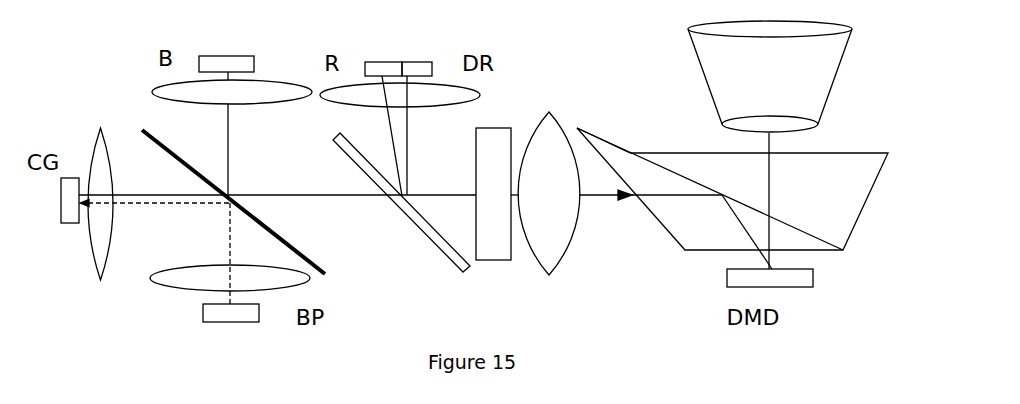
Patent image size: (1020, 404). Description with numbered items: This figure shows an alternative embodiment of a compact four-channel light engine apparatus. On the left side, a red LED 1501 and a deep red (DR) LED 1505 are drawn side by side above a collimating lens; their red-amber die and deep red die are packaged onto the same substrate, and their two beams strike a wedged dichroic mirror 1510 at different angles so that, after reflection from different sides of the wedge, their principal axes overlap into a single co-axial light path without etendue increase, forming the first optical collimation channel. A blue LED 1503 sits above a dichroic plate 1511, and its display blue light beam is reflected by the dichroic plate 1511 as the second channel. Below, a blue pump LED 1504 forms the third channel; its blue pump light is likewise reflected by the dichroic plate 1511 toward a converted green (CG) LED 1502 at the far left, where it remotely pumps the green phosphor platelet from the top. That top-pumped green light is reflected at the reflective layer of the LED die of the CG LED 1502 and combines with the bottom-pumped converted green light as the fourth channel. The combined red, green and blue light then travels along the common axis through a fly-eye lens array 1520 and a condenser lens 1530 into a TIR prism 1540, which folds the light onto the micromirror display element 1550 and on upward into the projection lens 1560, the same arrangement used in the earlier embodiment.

The red LED 1501 is at (382, 58).
The converted green (CG) LED 1502 is at (60, 225).
The blue LED 1503 is at (208, 53).
The blue pump LED 1504 is at (257, 323).
The deep red (DR) LED 1505 is at (422, 58).
The wedged dichroic mirror 1510 is at (425, 231).
The dichroic plate 1511 is at (293, 244).
The fly-eye lens array 1520 is at (500, 127).
The condenser lens 1530 is at (567, 260).
The TIR prism 1540 is at (870, 200).
The digital micromirror device (DMD) 1550 is at (810, 288).
The projection lens 1560 is at (838, 68).